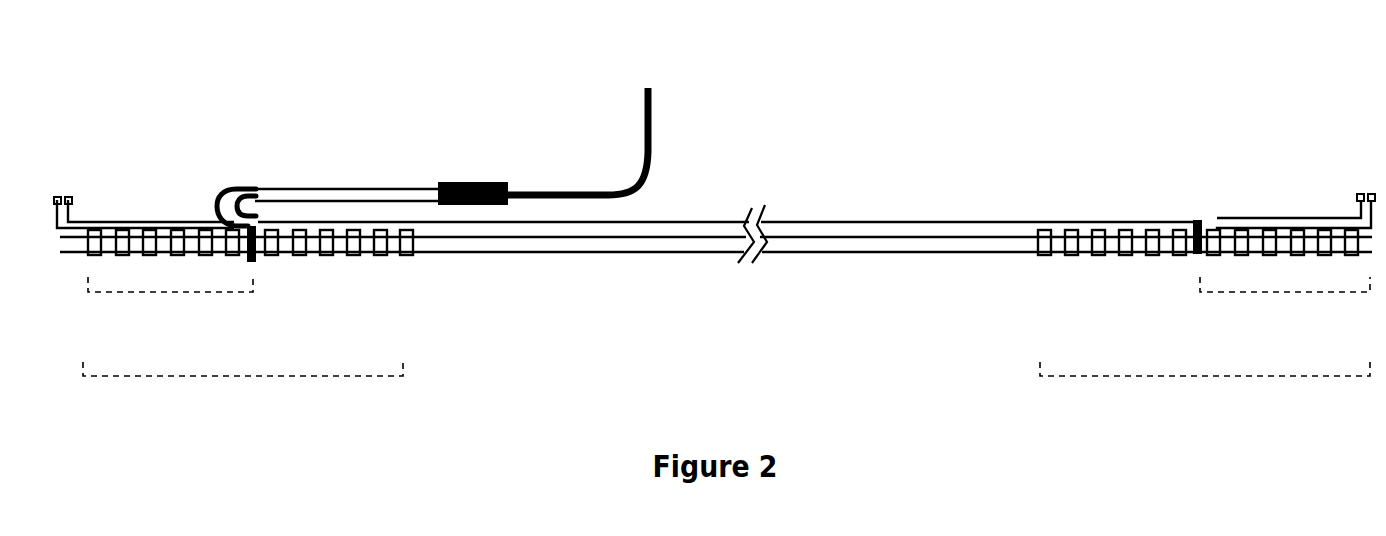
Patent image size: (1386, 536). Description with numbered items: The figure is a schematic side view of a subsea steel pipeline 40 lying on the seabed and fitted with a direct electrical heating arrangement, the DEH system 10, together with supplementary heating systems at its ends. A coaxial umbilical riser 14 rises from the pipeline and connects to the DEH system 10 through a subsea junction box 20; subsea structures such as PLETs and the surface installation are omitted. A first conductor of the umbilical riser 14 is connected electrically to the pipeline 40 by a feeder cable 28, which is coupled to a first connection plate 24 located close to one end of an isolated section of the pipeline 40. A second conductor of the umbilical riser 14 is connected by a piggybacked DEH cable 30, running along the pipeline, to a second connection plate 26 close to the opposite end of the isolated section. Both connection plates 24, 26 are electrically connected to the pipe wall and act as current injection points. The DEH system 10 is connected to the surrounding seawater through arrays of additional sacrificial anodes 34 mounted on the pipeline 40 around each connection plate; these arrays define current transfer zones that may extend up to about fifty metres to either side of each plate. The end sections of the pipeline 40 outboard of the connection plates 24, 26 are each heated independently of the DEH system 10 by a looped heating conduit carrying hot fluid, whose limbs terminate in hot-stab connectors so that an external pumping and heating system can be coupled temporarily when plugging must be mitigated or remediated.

The DEH system 10 is at (971, 112).
The coaxial umbilical riser 14 is at (653, 105).
The subsea junction box 20 is at (465, 181).
The first connection plate 24 is at (263, 262).
The second connection plate 26 is at (1196, 219).
The feeder cable 28 is at (234, 186).
The piggybacked DEH cable 30 is at (362, 187).
The sacrificial anodes 34 is at (352, 258).
The steel pipeline 40 is at (668, 253).